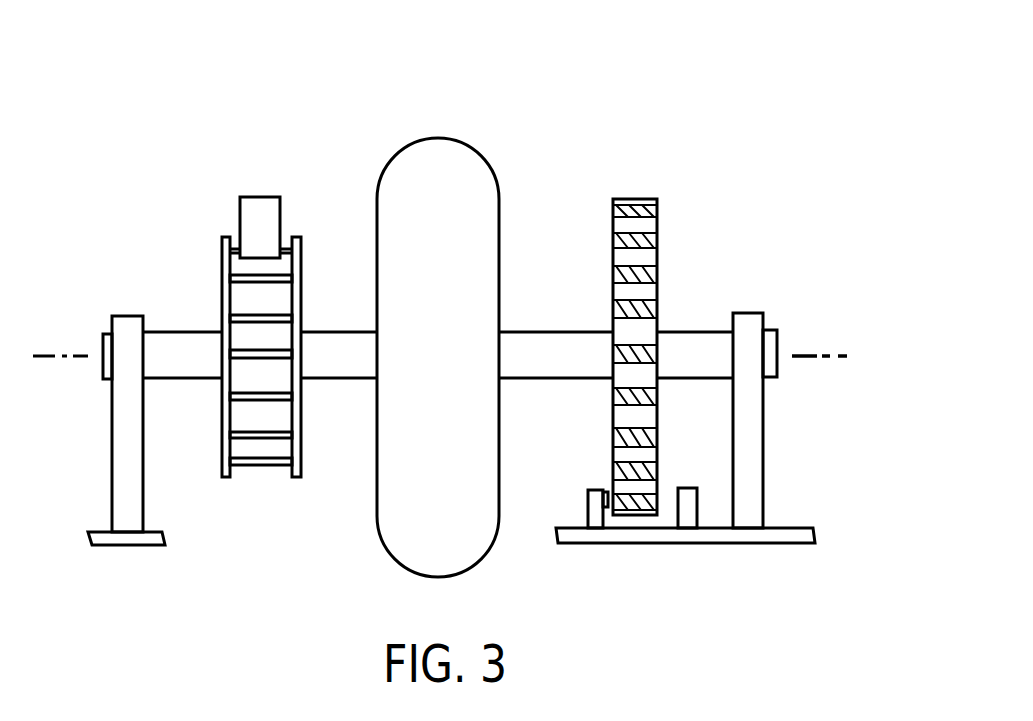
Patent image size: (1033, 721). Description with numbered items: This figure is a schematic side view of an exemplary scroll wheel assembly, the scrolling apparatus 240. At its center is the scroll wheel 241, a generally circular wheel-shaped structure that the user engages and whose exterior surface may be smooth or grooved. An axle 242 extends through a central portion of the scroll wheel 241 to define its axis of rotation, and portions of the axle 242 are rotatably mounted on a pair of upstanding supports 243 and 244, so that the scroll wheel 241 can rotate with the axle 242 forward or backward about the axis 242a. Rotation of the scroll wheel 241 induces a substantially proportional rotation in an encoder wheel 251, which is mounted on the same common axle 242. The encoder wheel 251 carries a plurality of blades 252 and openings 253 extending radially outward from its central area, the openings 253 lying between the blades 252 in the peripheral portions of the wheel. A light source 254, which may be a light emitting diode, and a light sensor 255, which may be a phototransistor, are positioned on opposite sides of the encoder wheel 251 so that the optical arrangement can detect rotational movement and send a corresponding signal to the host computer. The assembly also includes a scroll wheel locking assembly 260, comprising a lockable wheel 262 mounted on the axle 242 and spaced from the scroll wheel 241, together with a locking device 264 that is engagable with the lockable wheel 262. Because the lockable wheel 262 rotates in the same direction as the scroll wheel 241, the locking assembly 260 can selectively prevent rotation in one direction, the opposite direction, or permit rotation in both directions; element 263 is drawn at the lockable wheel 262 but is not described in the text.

The scrolling apparatus 240 is at (636, 82).
The scroll wheel 241 is at (470, 158).
The axle 242 is at (703, 342).
The axis 242a is at (808, 353).
The support 243 is at (122, 432).
The support 244 is at (753, 425).
The encoder wheel 251 is at (658, 222).
The blades 252 is at (623, 257).
The openings 253 is at (623, 238).
The light source 254 is at (677, 506).
The light sensor 255 is at (593, 505).
The scroll wheel locking assembly 260 is at (206, 191).
The lockable wheel 262 is at (302, 447).
The sprocket rung 263 is at (263, 468).
The locking device 264 is at (272, 233).